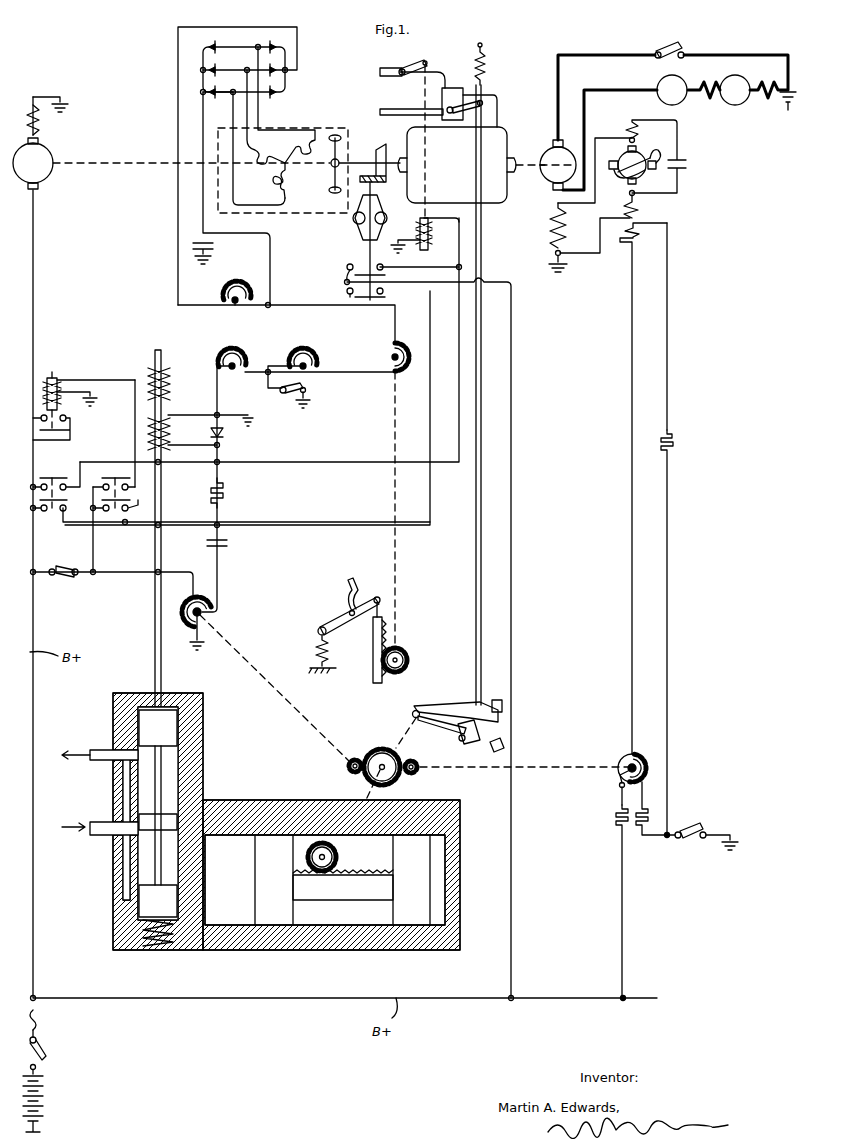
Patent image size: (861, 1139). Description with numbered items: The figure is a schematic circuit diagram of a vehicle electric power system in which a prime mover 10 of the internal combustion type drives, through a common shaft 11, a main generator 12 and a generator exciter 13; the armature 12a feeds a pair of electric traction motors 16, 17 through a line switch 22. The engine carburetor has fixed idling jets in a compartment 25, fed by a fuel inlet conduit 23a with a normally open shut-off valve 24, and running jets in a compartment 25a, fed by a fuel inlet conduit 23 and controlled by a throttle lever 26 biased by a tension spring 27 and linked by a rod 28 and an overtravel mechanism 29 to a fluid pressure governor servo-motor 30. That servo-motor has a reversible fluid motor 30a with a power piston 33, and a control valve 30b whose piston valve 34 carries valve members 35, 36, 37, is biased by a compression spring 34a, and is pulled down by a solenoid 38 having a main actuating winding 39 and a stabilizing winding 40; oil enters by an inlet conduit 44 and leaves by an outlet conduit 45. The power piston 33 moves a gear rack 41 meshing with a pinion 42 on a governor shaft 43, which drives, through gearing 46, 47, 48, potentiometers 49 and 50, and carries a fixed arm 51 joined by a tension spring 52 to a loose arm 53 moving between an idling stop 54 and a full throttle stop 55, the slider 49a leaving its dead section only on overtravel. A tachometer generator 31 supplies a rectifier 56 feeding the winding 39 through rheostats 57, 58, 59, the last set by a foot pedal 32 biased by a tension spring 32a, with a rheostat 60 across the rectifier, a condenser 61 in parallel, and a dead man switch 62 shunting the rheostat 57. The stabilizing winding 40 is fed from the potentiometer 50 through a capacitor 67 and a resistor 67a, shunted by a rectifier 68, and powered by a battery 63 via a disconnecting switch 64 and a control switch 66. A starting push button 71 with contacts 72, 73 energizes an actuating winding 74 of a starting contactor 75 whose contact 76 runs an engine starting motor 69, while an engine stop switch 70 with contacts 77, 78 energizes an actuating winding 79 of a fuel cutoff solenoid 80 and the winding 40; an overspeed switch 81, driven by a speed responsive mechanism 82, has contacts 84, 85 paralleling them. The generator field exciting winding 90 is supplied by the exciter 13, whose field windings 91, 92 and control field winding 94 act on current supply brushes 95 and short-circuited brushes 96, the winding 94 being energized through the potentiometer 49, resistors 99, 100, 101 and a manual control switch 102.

The prime mover 10 is at (407, 133).
The common shaft 11 is at (528, 160).
The main generator 12 is at (545, 210).
The armature 12a is at (568, 145).
The generator exciter 13 is at (638, 155).
The electric traction motor 16 is at (661, 80).
The electric traction motor 17 is at (722, 80).
The line switch 22 is at (668, 45).
The fuel inlet conduit 23 is at (388, 108).
The fuel inlet conduit 23a is at (380, 72).
The shut-off valve 24 is at (400, 68).
The compartment 25 is at (452, 88).
The compartment 25a is at (450, 120).
The throttle lever 26 is at (484, 108).
The tension spring 27 is at (490, 60).
The throttle rod 28 is at (476, 495).
The overtravel mechanism 29 is at (460, 722).
The fluid pressure governor servo-motor 30 is at (248, 792).
The reversible fluid pressure motor 30a is at (295, 800).
The fluid control valve 30b is at (205, 745).
The engine-driven tachometer generator 31 is at (314, 128).
The foot pedal 32 is at (345, 586).
The tension spring 32a is at (318, 650).
The power piston 33 is at (428, 888).
The piston valve 34 is at (161, 776).
The compression spring 34a is at (158, 948).
The valve member 35 is at (176, 722).
The valve member 36 is at (139, 812).
The valve member 37 is at (139, 912).
The solenoid 38 is at (158, 348).
The main actuating winding 39 is at (148, 372).
The stabilizing winding 40 is at (170, 440).
The gear rack 41 is at (355, 903).
The pinion 42 is at (336, 857).
The governor shaft 43 is at (404, 730).
The inlet conduit 44 is at (98, 835).
The outlet conduit 45 is at (98, 750).
The gearing 46 is at (348, 766).
The gearing 47 is at (382, 748).
The gearing 48 is at (418, 770).
The potentiometer 49 is at (636, 755).
The slider 49a is at (618, 777).
The potentiometer 50 is at (190, 625).
The arm 51 is at (430, 720).
The tension spring 52 is at (458, 735).
The arm 53 is at (430, 705).
The idling stop 54 is at (497, 700).
The full throttle stop 55 is at (492, 748).
The three-phase full wave rectifier 56 is at (248, 42).
The rheostat 57 is at (240, 346).
The rheostat 58 is at (312, 346).
The rheostat 59 is at (406, 373).
The rheostat 60 is at (242, 278).
The condenser 61 is at (215, 246).
The dead man switch 62 is at (283, 393).
The battery 63 is at (44, 1100).
The disconnecting switch 64 is at (46, 1052).
The manually operable control switch 66 is at (66, 578).
The capacitor 67 is at (228, 543).
The resistor 67a is at (224, 492).
The rectifier 68 is at (222, 437).
The engine starting motor 69 is at (53, 172).
The engine stop switch 70 is at (55, 471).
The engine starting push button 71 is at (118, 471).
The contact 72 is at (100, 478).
The contact 73 is at (136, 512).
The actuating winding 74 is at (62, 390).
The starting contactor 75 is at (52, 372).
The contact 76 is at (70, 435).
The contact 77 is at (68, 477).
The contact 78 is at (49, 515).
The actuating winding 79 is at (428, 248).
The fuel cutoff solenoid 80 is at (420, 222).
The overspeed switch 81 is at (368, 242).
The speed responsive mechanism 82 is at (382, 200).
The contact 84 is at (347, 296).
The contact 85 is at (347, 264).
The main field exciting winding 90 is at (580, 205).
The field winding 91 is at (627, 130).
The series load compensating winding 92 is at (640, 210).
The control field winding 94 is at (635, 236).
The current supply brushes 95 is at (609, 168).
The short-circuited brushes 96 is at (655, 169).
The resistor 99 is at (650, 814).
The resistor 100 is at (614, 814).
The resistor 101 is at (674, 440).
The manual control switch 102 is at (690, 840).